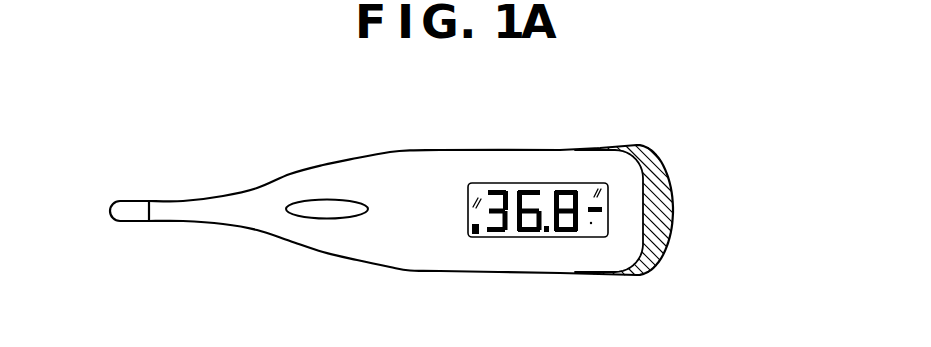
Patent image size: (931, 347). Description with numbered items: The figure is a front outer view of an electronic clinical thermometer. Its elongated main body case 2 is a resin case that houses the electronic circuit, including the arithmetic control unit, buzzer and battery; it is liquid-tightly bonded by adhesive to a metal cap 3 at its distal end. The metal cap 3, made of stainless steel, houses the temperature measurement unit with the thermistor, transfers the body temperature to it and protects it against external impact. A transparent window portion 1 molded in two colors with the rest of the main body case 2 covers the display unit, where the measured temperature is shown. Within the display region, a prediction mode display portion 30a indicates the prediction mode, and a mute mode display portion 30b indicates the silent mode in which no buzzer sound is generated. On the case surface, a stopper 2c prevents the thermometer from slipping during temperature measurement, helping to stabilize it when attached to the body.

The transparent window portion 1 is at (480, 189).
The main body case 2 is at (543, 149).
The stopper 2c is at (327, 199).
The metal cap 3 is at (128, 204).
The prediction mode display portion 30a is at (602, 209).
The mute mode display portion 30b is at (474, 237).